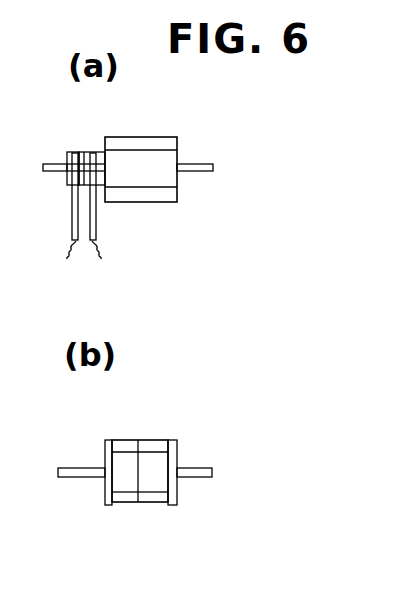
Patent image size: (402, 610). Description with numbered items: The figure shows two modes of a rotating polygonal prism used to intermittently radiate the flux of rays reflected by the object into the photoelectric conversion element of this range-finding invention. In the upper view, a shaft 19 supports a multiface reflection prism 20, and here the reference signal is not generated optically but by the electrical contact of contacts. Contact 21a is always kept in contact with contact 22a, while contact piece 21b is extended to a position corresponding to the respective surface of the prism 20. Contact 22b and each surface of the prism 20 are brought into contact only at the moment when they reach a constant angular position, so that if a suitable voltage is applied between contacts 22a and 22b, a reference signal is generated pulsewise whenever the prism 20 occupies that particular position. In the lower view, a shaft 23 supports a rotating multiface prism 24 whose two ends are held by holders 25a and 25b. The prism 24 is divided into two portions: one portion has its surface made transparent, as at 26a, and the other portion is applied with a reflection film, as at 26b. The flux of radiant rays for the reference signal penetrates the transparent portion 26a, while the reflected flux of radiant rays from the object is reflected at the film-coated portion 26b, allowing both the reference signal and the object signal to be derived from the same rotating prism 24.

The shaft 19 is at (198, 164).
The multiface reflection prism 20 is at (153, 143).
The contact 21a is at (67, 157).
The contact piece 21b is at (100, 156).
The contact 22a is at (72, 217).
The contact 22b is at (97, 224).
The shaft 23 is at (200, 468).
The rotating multiface prism 24 is at (125, 447).
The holder 25a is at (104, 455).
The holder 25b is at (172, 440).
The transparent portion 26a is at (123, 497).
The reflection film portion 26b is at (155, 497).